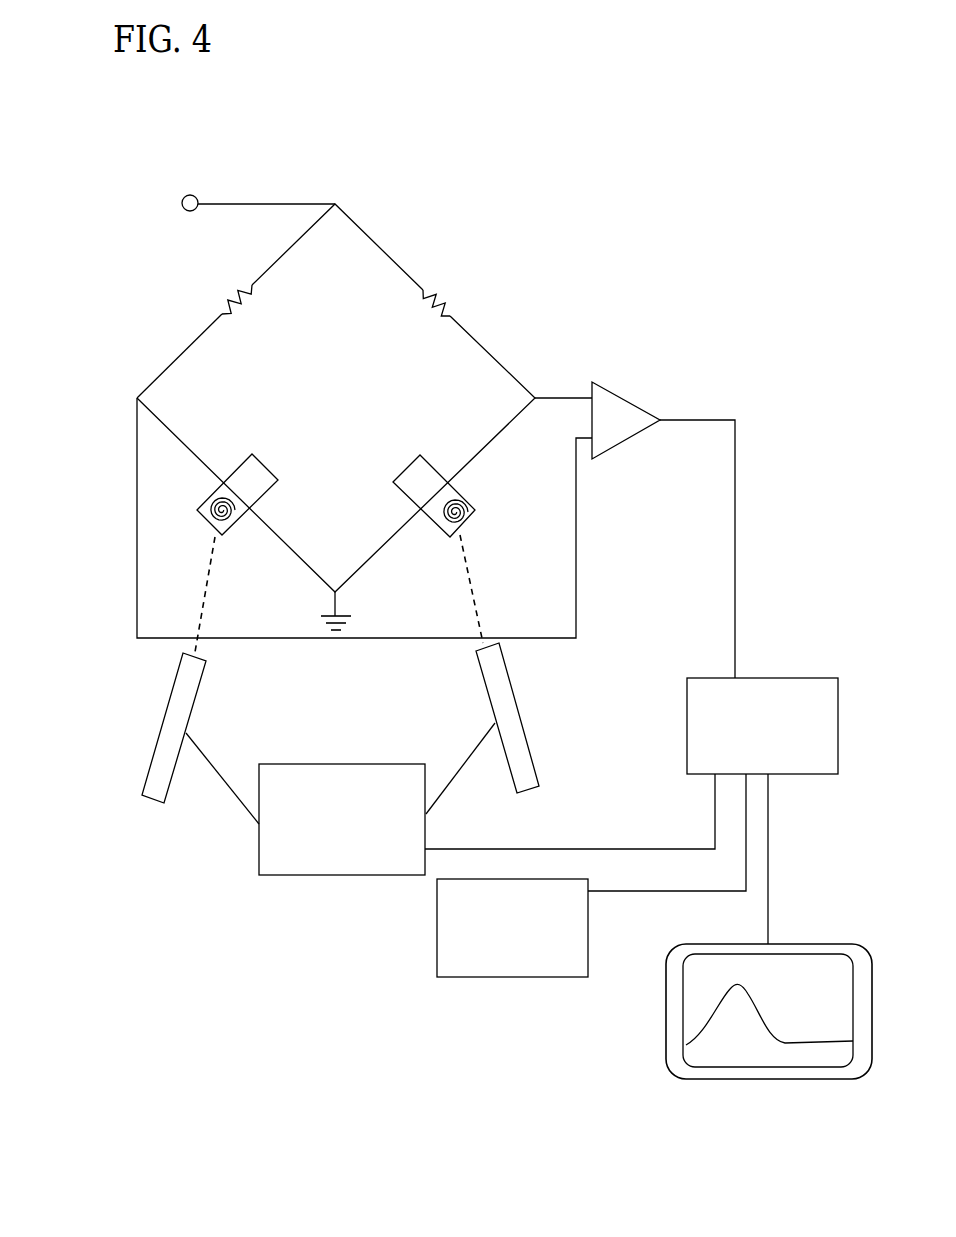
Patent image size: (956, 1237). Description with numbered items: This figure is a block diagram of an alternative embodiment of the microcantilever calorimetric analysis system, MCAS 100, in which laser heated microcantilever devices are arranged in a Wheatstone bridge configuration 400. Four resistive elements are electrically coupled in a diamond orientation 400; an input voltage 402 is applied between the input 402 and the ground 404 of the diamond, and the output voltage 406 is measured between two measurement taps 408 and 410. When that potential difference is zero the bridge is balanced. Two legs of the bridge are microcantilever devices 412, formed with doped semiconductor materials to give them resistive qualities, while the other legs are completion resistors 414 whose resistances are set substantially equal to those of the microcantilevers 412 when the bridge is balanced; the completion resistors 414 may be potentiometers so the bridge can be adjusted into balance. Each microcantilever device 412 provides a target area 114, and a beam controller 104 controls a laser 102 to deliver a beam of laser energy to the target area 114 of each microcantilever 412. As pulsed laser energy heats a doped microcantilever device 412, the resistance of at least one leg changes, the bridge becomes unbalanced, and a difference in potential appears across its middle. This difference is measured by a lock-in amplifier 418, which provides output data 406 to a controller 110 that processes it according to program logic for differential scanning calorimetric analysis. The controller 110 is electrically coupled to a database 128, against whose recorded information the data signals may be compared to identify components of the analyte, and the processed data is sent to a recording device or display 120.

The MCAS 100 is at (522, 143).
The laser 102 is at (172, 702).
The beam controller 104 is at (350, 877).
The controller 110 is at (687, 725).
The target area 114 is at (212, 520).
The display 120 is at (667, 1048).
The database 128 is at (547, 978).
The Wheatstone bridge configuration 400 is at (144, 372).
The input voltage 402 is at (190, 195).
The ground 404 is at (340, 632).
The output voltage 406 is at (707, 422).
The measurement tap 408 is at (137, 499).
The measurement tap 410 is at (563, 398).
The microcantilever device 412 is at (268, 466).
The completion resistors 414 is at (220, 310).
The lock-in amplifier 418 is at (618, 393).